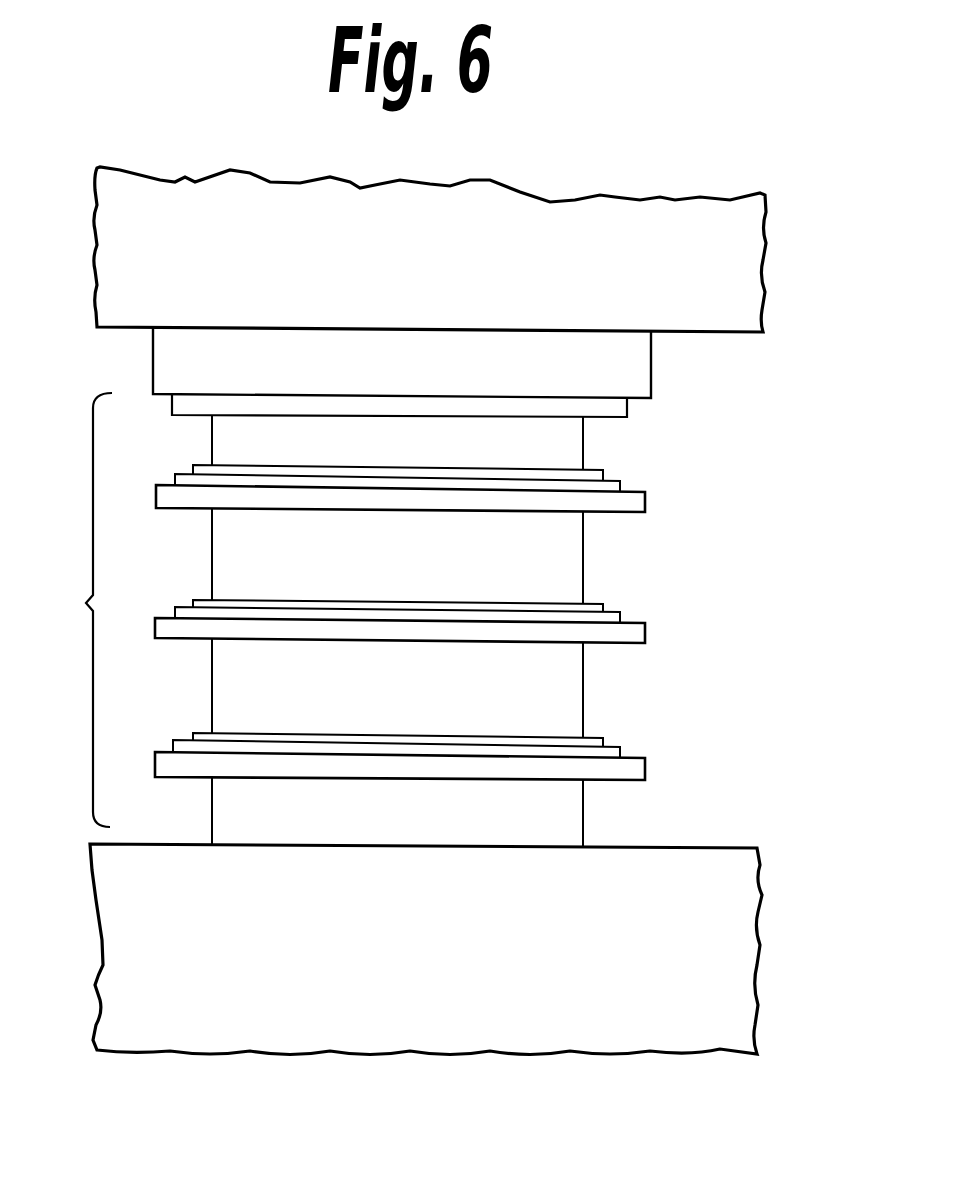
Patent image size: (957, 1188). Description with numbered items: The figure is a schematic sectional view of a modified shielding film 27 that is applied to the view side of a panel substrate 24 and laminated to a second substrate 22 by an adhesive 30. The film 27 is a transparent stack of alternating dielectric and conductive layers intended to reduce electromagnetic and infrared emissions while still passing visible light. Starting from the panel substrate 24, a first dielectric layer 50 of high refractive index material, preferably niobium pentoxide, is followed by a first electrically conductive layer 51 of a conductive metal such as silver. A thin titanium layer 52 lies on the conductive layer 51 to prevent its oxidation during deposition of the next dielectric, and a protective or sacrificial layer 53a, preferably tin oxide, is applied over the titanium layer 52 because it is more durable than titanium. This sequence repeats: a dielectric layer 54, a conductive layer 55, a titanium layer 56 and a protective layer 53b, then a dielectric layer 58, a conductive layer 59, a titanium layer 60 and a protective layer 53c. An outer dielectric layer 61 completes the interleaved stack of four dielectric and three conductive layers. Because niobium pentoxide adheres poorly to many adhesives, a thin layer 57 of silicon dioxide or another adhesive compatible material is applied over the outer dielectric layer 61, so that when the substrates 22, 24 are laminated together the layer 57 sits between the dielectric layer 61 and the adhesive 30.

The substrate 22 is at (740, 270).
The panel substrate 24 is at (730, 928).
The shielding film 27 is at (71, 610).
The adhesive 30 is at (623, 371).
The dielectric layer 50 is at (575, 815).
The electrically conductive layer 51 is at (645, 769).
The titanium layer 52 is at (620, 749).
The protective layer 53a is at (603, 739).
The protective layer 53b is at (603, 605).
The protective layer 53c is at (603, 471).
The dielectric layer 54 is at (563, 673).
The electrically conductive layer 55 is at (645, 639).
The titanium layer 56 is at (620, 615).
The adhesive compatible layer 57 is at (628, 413).
The dielectric layer 58 is at (567, 558).
The electrically conductive layer 59 is at (645, 508).
The titanium layer 60 is at (620, 482).
The outer dielectric layer 61 is at (560, 435).